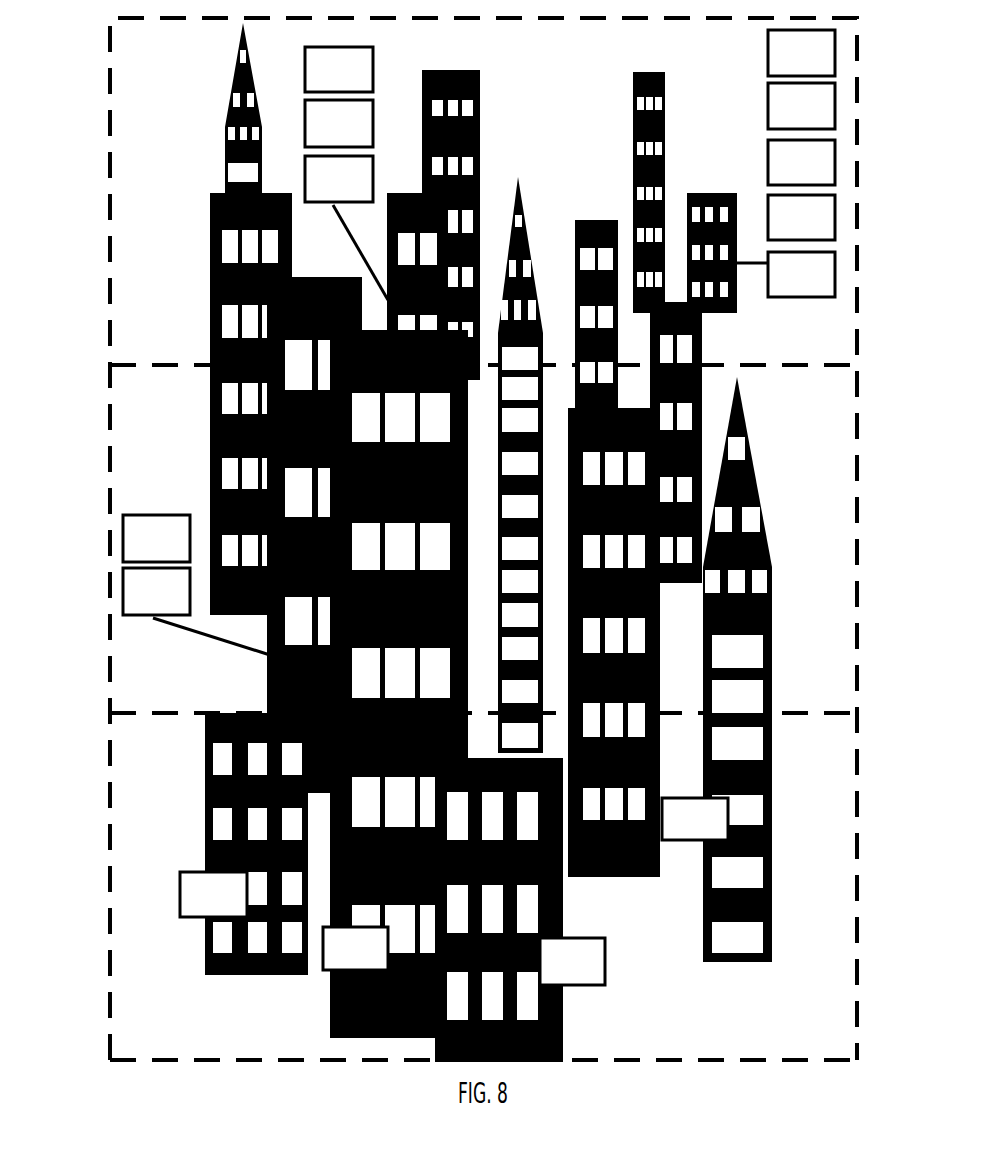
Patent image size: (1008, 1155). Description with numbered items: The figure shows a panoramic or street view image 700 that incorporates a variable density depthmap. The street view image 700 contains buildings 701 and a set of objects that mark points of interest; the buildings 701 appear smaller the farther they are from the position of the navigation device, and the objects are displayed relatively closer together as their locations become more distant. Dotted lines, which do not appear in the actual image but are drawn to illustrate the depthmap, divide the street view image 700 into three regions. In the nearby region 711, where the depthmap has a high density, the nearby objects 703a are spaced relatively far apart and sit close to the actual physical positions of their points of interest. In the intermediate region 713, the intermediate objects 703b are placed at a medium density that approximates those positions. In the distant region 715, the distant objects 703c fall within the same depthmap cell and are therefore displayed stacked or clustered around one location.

The street view image 700 is at (100, 159).
The buildings 701 is at (543, 214).
The nearby objects 703a is at (190, 873).
The intermediate objects 703b is at (172, 516).
The distant objects 703c is at (768, 64).
The nearby region 711 is at (483, 1034).
The intermediate region 713 is at (483, 682).
The distant region 715 is at (483, 333).